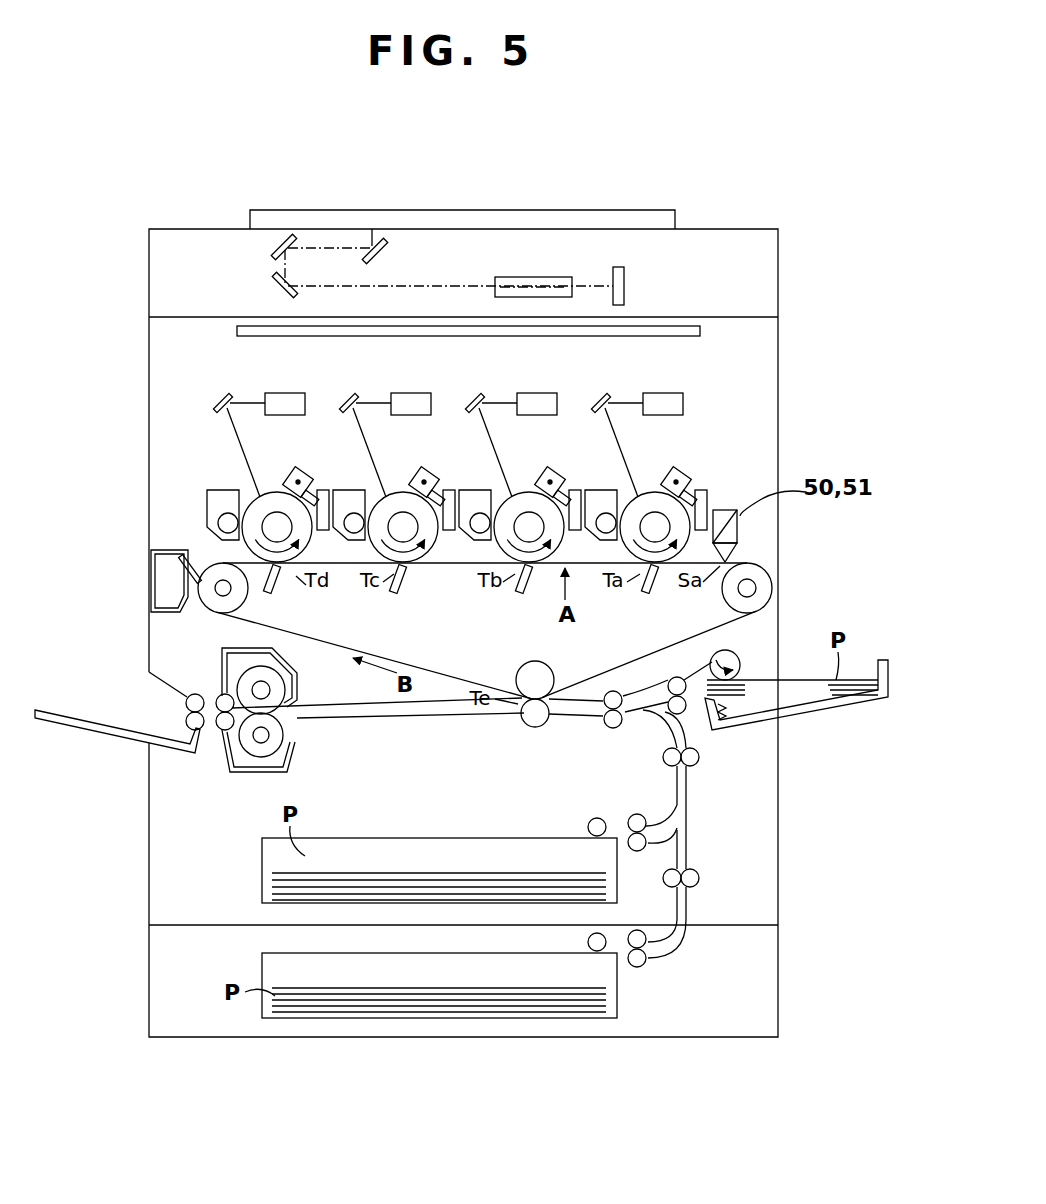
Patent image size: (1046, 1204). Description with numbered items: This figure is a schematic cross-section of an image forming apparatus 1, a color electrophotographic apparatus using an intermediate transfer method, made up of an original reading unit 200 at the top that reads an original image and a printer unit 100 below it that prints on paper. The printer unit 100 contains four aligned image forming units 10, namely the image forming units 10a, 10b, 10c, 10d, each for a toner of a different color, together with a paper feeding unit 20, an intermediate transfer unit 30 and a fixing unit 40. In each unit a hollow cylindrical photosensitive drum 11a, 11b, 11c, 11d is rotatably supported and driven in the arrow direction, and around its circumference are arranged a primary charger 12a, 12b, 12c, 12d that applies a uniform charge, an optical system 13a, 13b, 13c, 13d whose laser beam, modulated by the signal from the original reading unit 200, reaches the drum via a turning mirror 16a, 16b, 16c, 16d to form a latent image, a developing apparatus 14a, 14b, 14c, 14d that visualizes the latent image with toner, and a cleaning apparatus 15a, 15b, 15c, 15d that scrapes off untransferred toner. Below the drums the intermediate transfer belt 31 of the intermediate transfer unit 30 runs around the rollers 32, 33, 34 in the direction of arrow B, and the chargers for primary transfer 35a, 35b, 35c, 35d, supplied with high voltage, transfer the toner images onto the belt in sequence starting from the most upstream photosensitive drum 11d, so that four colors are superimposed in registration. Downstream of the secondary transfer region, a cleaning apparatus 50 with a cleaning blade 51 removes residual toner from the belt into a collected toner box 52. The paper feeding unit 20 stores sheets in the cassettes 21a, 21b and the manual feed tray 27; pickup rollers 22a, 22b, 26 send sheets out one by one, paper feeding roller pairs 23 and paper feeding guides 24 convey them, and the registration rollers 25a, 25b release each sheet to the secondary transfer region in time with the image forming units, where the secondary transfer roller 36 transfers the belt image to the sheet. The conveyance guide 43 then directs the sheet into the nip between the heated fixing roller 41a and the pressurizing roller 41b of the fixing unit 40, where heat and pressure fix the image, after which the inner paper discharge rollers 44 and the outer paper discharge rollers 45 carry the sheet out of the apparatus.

The image forming apparatus 1 is at (688, 170).
The original reading unit 200 is at (760, 286).
The printer unit 100 is at (760, 350).
The image forming units 10 is at (716, 416).
The image forming unit 10a is at (623, 396).
The image forming unit 10b is at (497, 396).
The image forming unit 10c is at (371, 396).
The image forming unit 10d is at (245, 396).
The photosensitive drum 11a is at (645, 491).
The photosensitive drum 11b is at (519, 491).
The photosensitive drum 11c is at (393, 491).
The photosensitive drum 11d is at (267, 491).
The primary charger 12a is at (679, 470).
The primary charger 12b is at (553, 470).
The primary charger 12c is at (427, 470).
The primary charger 12d is at (301, 470).
The optical system 13a is at (663, 393).
The optical system 13b is at (537, 393).
The optical system 13c is at (411, 393).
The optical system 13d is at (285, 393).
The developing apparatus 14a is at (596, 490).
The developing apparatus 14b is at (469, 490).
The developing apparatus 14c is at (343, 490).
The developing apparatus 14d is at (217, 490).
The cleaning apparatus 15a is at (701, 490).
The cleaning apparatus 15b is at (575, 531).
The cleaning apparatus 15c is at (449, 531).
The cleaning apparatus 15d is at (323, 531).
The turning mirror 16a is at (595, 401).
The turning mirror 16b is at (467, 401).
The turning mirror 16c is at (341, 401).
The turning mirror 16d is at (215, 398).
The paper feeding unit 20 is at (695, 822).
The cassette 21a is at (378, 838).
The cassette 21b is at (268, 970).
The pickup roller 22a is at (593, 818).
The pickup roller 22b is at (601, 934).
The paper feeding roller pairs 23 is at (676, 680).
The paper feeding guides 24 is at (684, 735).
The registration roller 25a is at (618, 696).
The registration roller 25b is at (608, 726).
The pickup roller 26 is at (741, 661).
The manual feed tray 27 is at (832, 718).
The intermediate transfer unit 30 is at (428, 660).
The intermediate transfer belt 31 is at (617, 666).
The roller 32 is at (724, 598).
The roller 33 is at (216, 612).
The roller 34 is at (549, 668).
The charger for primary transfer 35a is at (652, 590).
The charger for primary transfer 35b is at (527, 590).
The charger for primary transfer 35c is at (401, 590).
The charger for primary transfer 35d is at (275, 590).
The secondary transfer roller 36 is at (536, 728).
The fixing unit 40 is at (233, 782).
The fixing roller 41a is at (272, 690).
The pressurizing roller 41b is at (270, 745).
The conveyance guide 43 is at (418, 718).
The inner paper discharge rollers 44 is at (222, 733).
The outer paper discharge rollers 45 is at (195, 696).
The cleaning apparatus 50 is at (146, 573).
The cleaning blade 51 is at (178, 556).
The collected toner box 52 is at (182, 613).